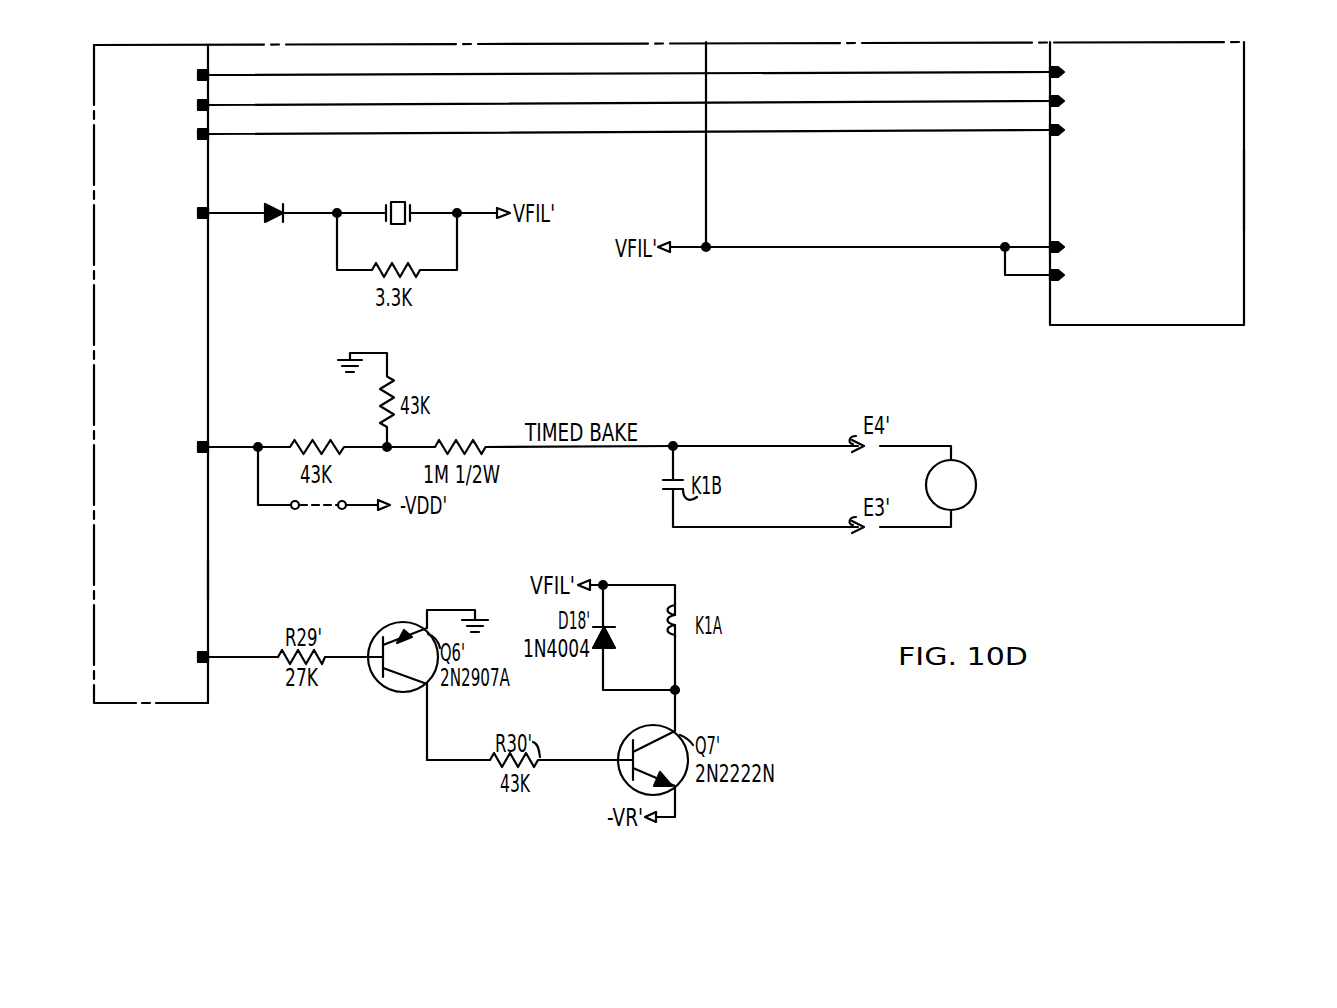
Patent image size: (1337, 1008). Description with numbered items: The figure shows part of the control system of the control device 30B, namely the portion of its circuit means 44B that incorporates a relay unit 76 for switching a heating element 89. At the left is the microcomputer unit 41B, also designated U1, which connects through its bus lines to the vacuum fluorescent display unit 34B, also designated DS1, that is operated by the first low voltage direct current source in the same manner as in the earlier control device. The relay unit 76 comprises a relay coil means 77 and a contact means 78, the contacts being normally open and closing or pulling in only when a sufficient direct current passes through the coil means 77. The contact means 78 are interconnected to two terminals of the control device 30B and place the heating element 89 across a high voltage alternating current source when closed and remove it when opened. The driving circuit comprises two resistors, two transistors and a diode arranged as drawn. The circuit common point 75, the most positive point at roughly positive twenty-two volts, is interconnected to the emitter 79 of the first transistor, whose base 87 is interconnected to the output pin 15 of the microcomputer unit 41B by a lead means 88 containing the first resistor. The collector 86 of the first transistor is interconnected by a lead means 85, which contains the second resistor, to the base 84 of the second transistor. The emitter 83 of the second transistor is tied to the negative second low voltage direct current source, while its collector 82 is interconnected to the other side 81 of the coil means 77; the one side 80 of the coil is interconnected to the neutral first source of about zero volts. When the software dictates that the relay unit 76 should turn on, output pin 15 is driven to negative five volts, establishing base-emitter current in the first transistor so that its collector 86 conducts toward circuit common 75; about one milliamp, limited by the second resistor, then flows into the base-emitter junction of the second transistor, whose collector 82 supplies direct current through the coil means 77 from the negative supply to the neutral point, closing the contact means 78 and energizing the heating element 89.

The microcomputer unit U1 is at (170, 703).
The vacuum fluorescent display unit DS1 is at (1118, 325).
The vacuum fluorescent display unit 34B is at (1244, 186).
The microcomputer unit 41B is at (210, 575).
The output pin 15 is at (243, 642).
The contact means 78 is at (660, 482).
The heating element 89 is at (976, 483).
The relay unit 76 is at (762, 575).
The lead means 88 is at (336, 648).
The emitter 79 is at (411, 628).
The circuit common point 75 is at (438, 610).
The base 87 is at (372, 672).
The collector 86 is at (405, 690).
The lead means 85 is at (558, 757).
The collector 82 is at (655, 728).
The base 84 is at (620, 772).
The emitter 83 is at (686, 781).
The one side of coil means 80 is at (673, 614).
The relay coil means 77 is at (670, 626).
The other side of coil means 81 is at (670, 636).
The circuit means 44B is at (345, 785).
The control device 30B is at (660, 854).